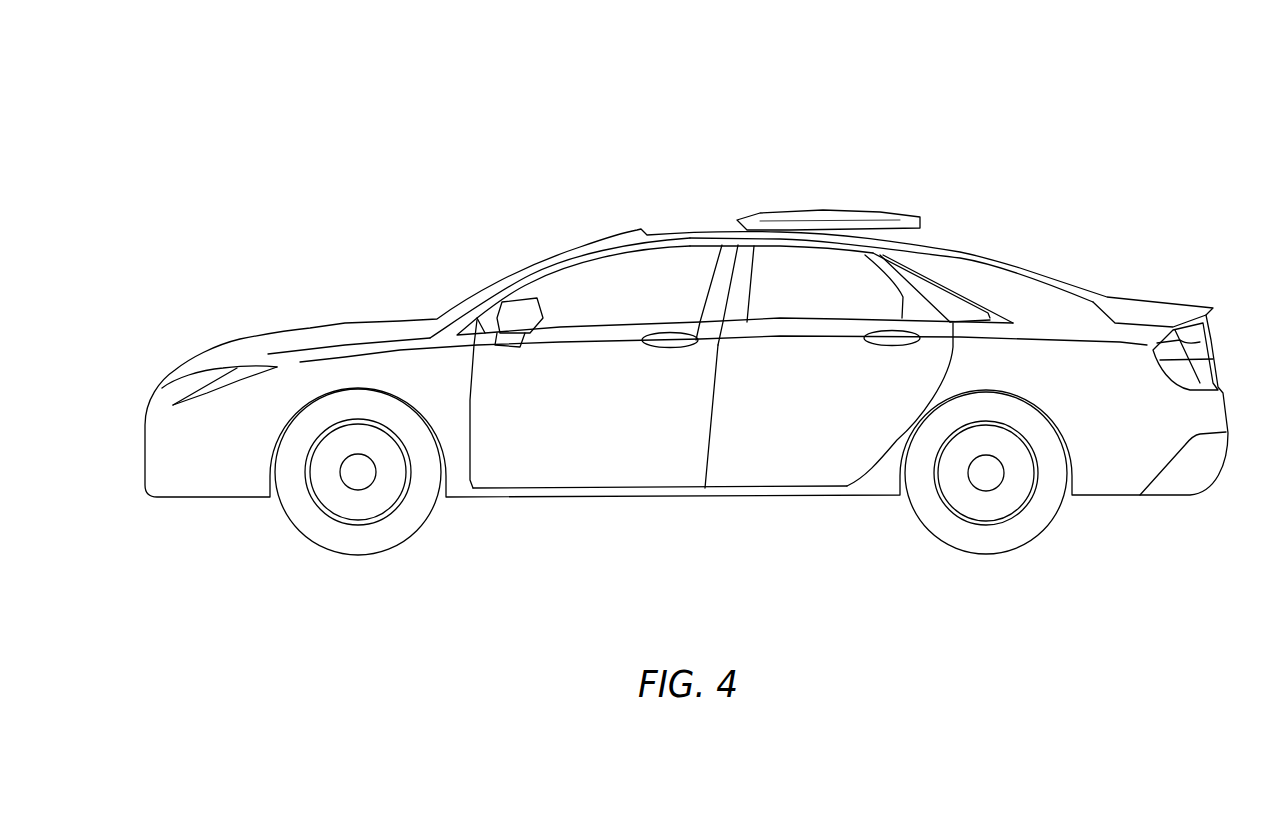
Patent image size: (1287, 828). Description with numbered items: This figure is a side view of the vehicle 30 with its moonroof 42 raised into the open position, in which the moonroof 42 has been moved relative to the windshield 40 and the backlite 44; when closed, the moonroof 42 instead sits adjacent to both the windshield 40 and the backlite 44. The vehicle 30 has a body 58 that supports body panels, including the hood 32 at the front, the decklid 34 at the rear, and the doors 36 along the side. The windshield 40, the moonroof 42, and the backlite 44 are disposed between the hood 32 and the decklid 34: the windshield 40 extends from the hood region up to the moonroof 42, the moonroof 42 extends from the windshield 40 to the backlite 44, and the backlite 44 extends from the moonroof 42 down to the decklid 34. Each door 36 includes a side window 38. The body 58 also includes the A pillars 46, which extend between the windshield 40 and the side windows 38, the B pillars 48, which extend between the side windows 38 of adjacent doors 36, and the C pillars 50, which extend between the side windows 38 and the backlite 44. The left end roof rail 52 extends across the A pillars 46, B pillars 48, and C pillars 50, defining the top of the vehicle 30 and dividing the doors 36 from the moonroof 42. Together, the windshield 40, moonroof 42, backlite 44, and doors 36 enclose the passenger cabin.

The vehicle 30 is at (809, 84).
The hood 32 is at (273, 333).
The decklid 34 is at (1175, 305).
The doors 36 is at (665, 478).
The side window 38 is at (632, 299).
The windshield 40 is at (558, 255).
The moonroof 42 is at (843, 210).
The backlite 44 is at (993, 257).
The A pillars 46 is at (512, 293).
The B pillars 48 is at (707, 296).
The C pillars 50 is at (1022, 308).
The left end roof rail 52 is at (697, 240).
The body 58 is at (435, 372).